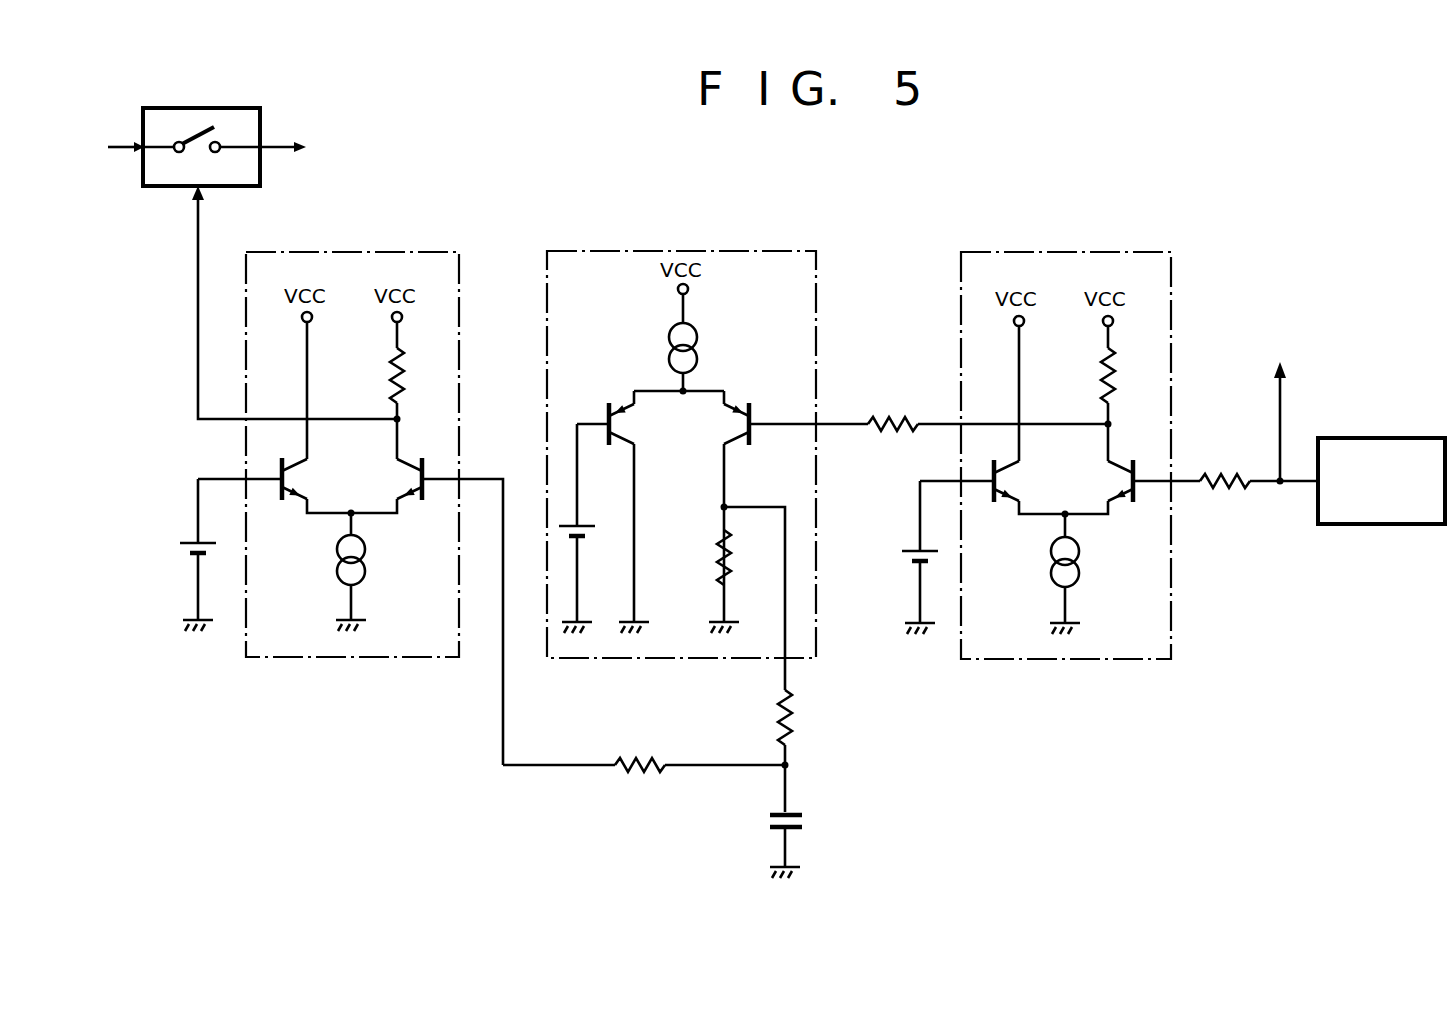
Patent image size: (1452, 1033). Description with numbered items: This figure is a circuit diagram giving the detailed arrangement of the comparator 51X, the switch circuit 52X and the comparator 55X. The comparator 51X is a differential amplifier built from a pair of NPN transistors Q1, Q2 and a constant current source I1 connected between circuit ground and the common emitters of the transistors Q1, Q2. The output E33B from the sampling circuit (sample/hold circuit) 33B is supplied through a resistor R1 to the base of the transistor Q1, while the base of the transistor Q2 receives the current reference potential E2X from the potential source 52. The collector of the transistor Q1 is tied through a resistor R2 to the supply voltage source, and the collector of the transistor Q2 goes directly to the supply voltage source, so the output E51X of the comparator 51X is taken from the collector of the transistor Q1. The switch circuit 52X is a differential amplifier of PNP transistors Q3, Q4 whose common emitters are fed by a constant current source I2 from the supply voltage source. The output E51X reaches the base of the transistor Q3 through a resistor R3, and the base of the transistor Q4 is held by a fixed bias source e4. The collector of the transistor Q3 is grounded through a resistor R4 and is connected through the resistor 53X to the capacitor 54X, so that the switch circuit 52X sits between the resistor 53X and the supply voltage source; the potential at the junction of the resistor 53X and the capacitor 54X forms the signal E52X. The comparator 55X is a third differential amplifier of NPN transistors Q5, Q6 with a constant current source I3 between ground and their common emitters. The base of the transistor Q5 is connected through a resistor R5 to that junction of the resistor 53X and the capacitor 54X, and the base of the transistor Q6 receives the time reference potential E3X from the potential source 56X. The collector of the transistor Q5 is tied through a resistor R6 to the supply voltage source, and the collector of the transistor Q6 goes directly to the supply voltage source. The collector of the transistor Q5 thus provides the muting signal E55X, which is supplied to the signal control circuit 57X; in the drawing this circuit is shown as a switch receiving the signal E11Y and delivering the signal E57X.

The signal control circuit 57X is at (185, 121).
The input signal E11Y is at (97, 148).
The output signal of signal control circuit E57X is at (318, 148).
The comparator 55X is at (382, 252).
The muting signal E55X is at (197, 420).
The resistor R6 is at (390, 372).
The NPN transistor Q6 is at (294, 480).
The NPN transistor Q5 is at (408, 481).
The constant current source I3 is at (365, 560).
The time reference potential E3X is at (211, 549).
The potential source 56X is at (184, 553).
The switch circuit 52X is at (720, 252).
The constant current source I2 is at (697, 348).
The PNP transistor Q4 is at (620, 425).
The PNP transistor Q3 is at (740, 443).
The resistor R4 is at (720, 558).
The fixed bias source e4 is at (590, 538).
The output of comparator E51X is at (937, 421).
The resistor R3 is at (885, 420).
The comparator 51X is at (1087, 252).
The resistor R2 is at (1098, 370).
The NPN transistor Q2 is at (1008, 483).
The NPN transistor Q1 is at (1116, 483).
The constant current source I1 is at (1078, 562).
The current reference potential E2X is at (927, 552).
The potential source 52 is at (903, 553).
The resistor R1 is at (1223, 467).
The output from sampling circuit E33B is at (1271, 407).
The sampling circuit 33B is at (1363, 525).
The resistor 53X is at (795, 700).
The output of switch circuit E52X is at (712, 764).
The resistor R5 is at (643, 772).
The capacitor 54X is at (806, 822).